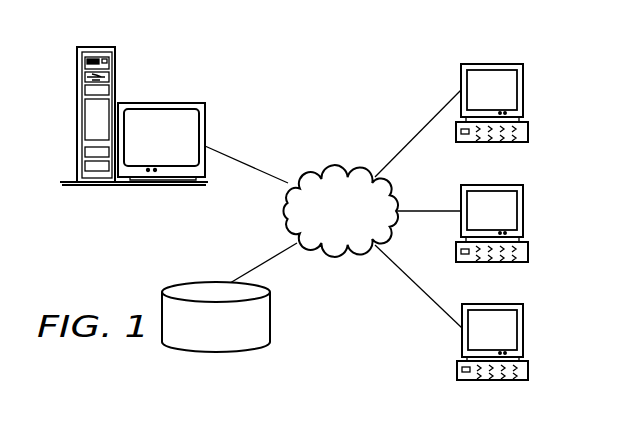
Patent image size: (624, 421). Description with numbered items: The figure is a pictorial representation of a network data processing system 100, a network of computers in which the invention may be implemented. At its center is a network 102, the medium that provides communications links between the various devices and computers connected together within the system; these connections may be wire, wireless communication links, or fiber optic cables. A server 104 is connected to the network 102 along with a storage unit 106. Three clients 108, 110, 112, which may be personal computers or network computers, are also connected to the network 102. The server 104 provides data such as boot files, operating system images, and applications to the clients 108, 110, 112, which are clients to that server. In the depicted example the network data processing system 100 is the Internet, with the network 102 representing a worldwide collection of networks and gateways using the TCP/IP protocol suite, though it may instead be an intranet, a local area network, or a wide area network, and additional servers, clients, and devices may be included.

The network data processing system 100 is at (392, 70).
The network 102 is at (318, 171).
The server 104 is at (77, 118).
The storage unit 106 is at (270, 318).
The client 108 is at (524, 88).
The client 110 is at (524, 212).
The client 112 is at (524, 328).